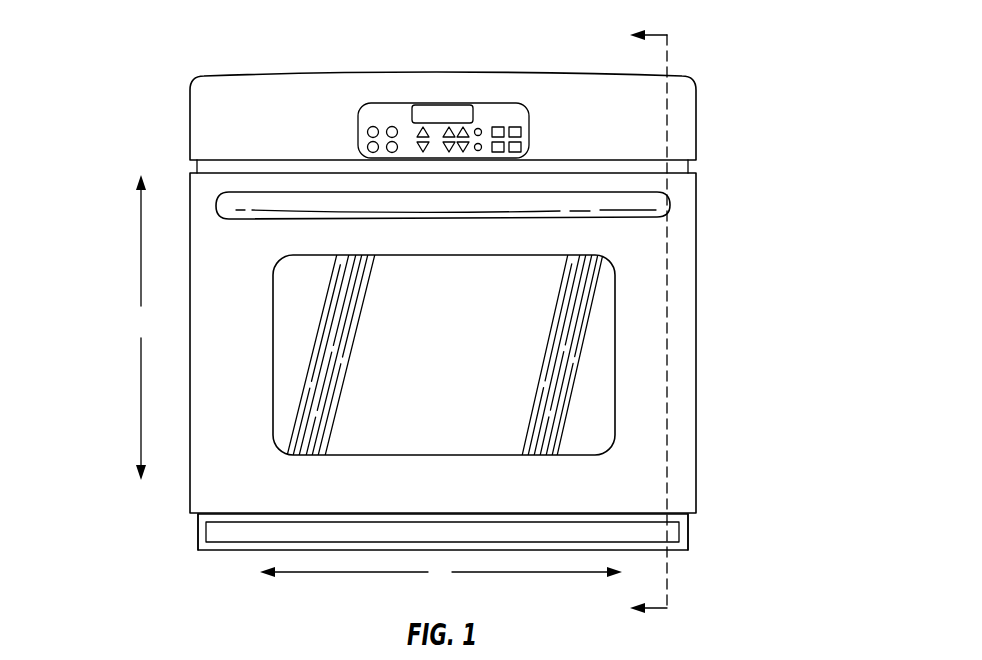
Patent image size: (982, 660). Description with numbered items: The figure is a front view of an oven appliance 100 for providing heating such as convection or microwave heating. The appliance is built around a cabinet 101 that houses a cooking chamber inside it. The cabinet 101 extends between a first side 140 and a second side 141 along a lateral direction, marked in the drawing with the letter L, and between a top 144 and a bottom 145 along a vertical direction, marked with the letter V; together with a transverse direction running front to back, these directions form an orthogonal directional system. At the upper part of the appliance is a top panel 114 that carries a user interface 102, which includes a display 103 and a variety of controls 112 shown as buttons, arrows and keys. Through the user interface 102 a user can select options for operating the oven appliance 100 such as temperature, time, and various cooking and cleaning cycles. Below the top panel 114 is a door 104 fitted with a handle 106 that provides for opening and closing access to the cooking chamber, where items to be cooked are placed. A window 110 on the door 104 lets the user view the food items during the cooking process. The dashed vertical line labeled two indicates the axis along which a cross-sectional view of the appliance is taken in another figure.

The oven appliance 100 is at (764, 88).
The cabinet 101 is at (688, 533).
The user interface 102 is at (500, 115).
The display 103 is at (440, 108).
The door 104 is at (672, 350).
The handle 106 is at (660, 204).
The window 110 is at (465, 367).
The controls 112 is at (371, 128).
The top panel 114 is at (680, 86).
The first side 140 is at (197, 565).
The second side 141 is at (688, 566).
The top 144 is at (138, 62).
The bottom 145 is at (166, 543).